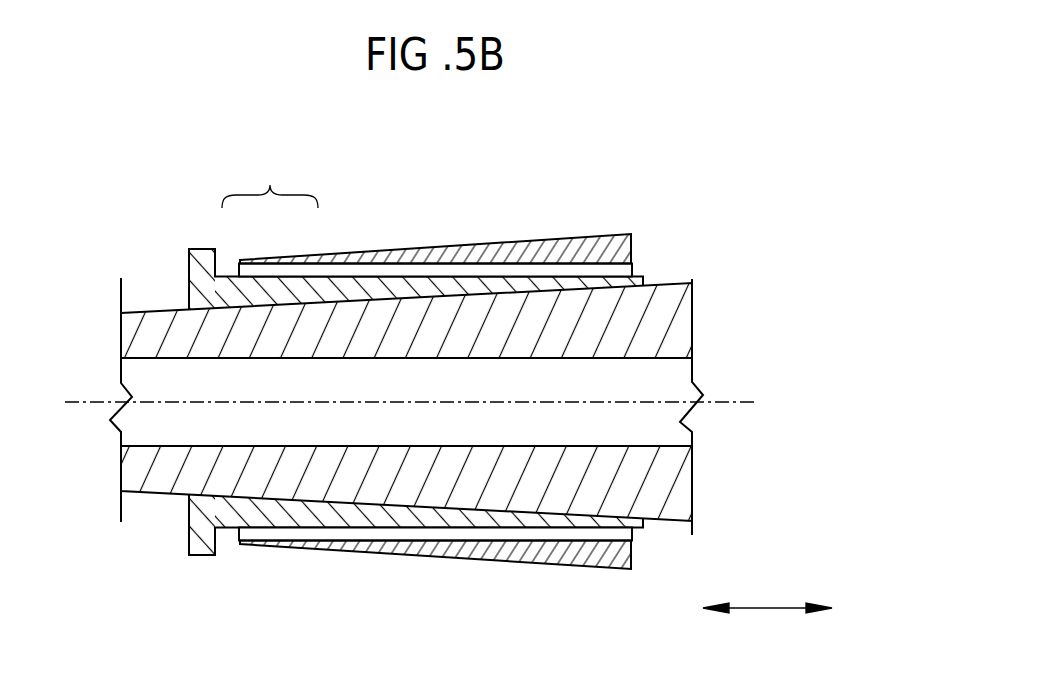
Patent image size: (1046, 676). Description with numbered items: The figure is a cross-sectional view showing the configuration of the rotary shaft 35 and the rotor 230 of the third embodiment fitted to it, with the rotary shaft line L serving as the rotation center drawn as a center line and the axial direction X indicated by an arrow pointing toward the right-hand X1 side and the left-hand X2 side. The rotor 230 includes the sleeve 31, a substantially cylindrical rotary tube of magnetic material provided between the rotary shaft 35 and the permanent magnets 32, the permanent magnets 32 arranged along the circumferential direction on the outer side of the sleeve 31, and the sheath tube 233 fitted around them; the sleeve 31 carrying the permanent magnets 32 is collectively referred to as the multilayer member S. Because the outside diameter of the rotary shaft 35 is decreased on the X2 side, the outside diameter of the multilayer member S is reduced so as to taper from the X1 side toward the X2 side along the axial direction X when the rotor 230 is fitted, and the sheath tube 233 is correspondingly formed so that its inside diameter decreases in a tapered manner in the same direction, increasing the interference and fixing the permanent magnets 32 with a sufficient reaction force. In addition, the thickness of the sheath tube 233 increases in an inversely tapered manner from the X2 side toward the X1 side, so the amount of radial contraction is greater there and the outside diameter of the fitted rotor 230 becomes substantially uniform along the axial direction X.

The rotor 230 is at (390, 168).
The sheath tube 233 is at (413, 243).
The sleeve 31 is at (228, 276).
The permanent magnets 32 is at (278, 270).
The rotary shaft 35 is at (152, 315).
The multilayer member S is at (270, 181).
The rotary shaft line L is at (738, 400).
The axial direction X is at (788, 610).
The X1 side X1 is at (836, 608).
The X2 side X2 is at (699, 608).